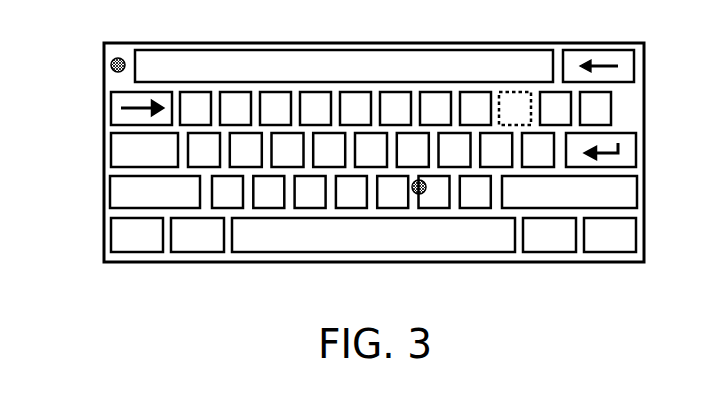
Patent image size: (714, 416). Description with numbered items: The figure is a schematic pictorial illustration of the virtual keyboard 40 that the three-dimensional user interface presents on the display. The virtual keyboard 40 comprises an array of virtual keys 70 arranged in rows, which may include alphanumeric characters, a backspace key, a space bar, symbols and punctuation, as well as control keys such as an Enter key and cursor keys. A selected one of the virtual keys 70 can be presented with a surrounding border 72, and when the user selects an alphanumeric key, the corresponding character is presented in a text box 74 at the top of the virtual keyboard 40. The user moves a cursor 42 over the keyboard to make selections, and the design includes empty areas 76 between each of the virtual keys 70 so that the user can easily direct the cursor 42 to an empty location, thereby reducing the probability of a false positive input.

The virtual keyboard 40 is at (104, 53).
The cursor 42 is at (419, 180).
The virtual keys 70 is at (111, 232).
The surrounding border 72 is at (505, 90).
The text box 74 is at (542, 63).
The empty areas 76 is at (172, 128).